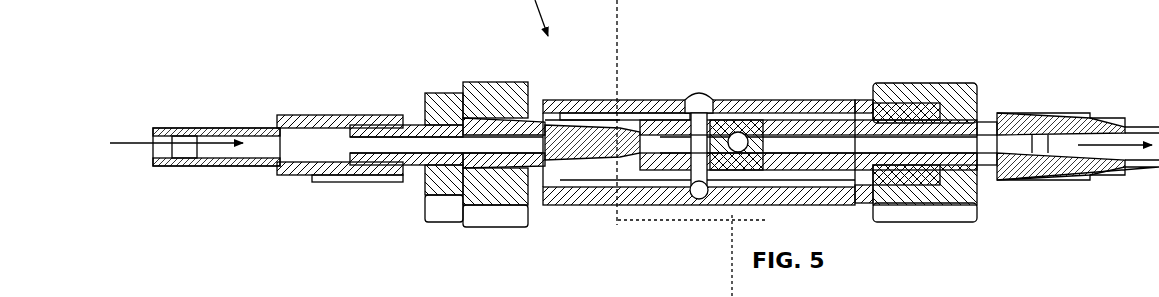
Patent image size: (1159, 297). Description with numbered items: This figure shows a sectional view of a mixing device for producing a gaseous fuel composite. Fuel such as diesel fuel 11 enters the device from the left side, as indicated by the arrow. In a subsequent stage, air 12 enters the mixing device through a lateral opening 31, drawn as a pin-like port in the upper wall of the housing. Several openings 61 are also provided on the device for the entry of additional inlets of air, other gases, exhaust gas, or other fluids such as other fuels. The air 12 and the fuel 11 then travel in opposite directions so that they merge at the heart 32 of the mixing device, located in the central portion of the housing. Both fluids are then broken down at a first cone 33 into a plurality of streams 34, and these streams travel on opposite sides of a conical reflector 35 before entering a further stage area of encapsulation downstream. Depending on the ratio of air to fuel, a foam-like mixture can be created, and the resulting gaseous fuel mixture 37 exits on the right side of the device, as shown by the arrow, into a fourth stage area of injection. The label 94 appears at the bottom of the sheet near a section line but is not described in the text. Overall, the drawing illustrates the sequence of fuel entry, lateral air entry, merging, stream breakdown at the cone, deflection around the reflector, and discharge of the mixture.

The diesel fuel 11 is at (184, 140).
The air 12 is at (698, 96).
The lateral opening 31 is at (712, 100).
The heart of the mixing device 32 is at (580, 100).
The first cone 33 is at (425, 187).
The plurality of streams 34 is at (485, 140).
The conical reflector 35 is at (537, 142).
The gaseous fuel mixture 37 is at (1098, 143).
The openings 61 is at (626, 100).
The section line 94 is at (574, 291).